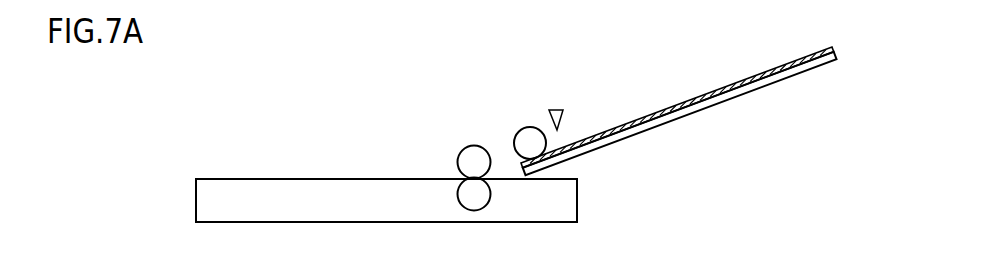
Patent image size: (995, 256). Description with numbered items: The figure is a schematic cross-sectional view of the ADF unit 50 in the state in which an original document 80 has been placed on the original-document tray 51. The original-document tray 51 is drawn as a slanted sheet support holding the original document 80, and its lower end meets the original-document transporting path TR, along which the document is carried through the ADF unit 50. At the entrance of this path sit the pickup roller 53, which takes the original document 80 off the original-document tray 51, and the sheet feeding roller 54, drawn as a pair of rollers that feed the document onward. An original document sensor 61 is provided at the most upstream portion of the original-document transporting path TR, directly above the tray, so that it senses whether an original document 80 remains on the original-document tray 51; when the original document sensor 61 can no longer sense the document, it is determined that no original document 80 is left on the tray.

The ADF unit 50 is at (170, 207).
The original-document tray 51 is at (800, 73).
The pickup roller 53 is at (527, 135).
The sheet feeding roller 54 is at (471, 152).
The original document sensor 61 is at (554, 110).
The original document 80 is at (694, 98).
The original-document transporting path TR is at (354, 178).